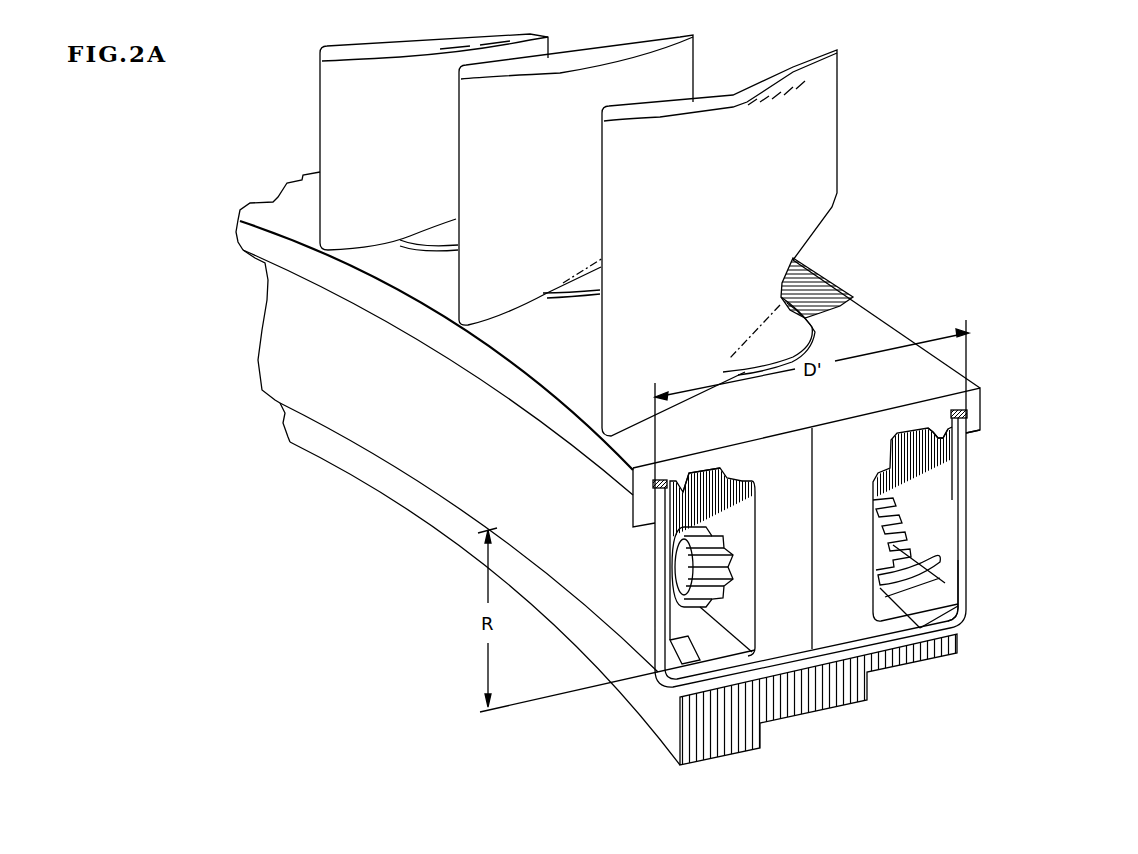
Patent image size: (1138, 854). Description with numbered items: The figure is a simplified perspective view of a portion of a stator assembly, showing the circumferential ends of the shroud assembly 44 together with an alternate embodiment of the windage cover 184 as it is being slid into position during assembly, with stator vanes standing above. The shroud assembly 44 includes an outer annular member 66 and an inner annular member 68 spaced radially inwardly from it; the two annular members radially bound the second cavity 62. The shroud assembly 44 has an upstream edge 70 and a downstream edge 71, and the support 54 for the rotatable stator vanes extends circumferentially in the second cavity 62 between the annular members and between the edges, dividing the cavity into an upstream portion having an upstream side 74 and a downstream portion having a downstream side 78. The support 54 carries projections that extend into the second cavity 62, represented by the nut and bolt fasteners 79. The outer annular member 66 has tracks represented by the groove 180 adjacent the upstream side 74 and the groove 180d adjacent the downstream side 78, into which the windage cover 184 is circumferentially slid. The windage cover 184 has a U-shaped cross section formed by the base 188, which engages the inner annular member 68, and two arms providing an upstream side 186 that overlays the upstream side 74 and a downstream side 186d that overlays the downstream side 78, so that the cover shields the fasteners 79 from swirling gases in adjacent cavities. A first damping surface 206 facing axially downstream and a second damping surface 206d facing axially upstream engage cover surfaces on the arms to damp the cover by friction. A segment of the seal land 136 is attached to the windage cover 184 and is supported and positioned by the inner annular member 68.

The shroud assembly 44 is at (1047, 373).
The support 54 is at (803, 533).
The second cavity 62 is at (744, 531).
The outer annular member 66 is at (280, 213).
The inner annular member 68 is at (688, 668).
The upstream edge 70 is at (383, 303).
The downstream edge 71 is at (982, 412).
The upstream side 74 is at (673, 643).
The downstream side 78 is at (950, 473).
The nut and bolt fasteners 79 is at (931, 512).
The seal land 136 is at (815, 712).
The groove 180 is at (682, 488).
The groove 180d is at (955, 433).
The windage cover 184 is at (500, 453).
The upstream side 186 is at (679, 582).
The downstream side 186d is at (945, 567).
The base 188 is at (970, 613).
The first damping surface 206 is at (652, 490).
The second damping surface 206d is at (973, 428).